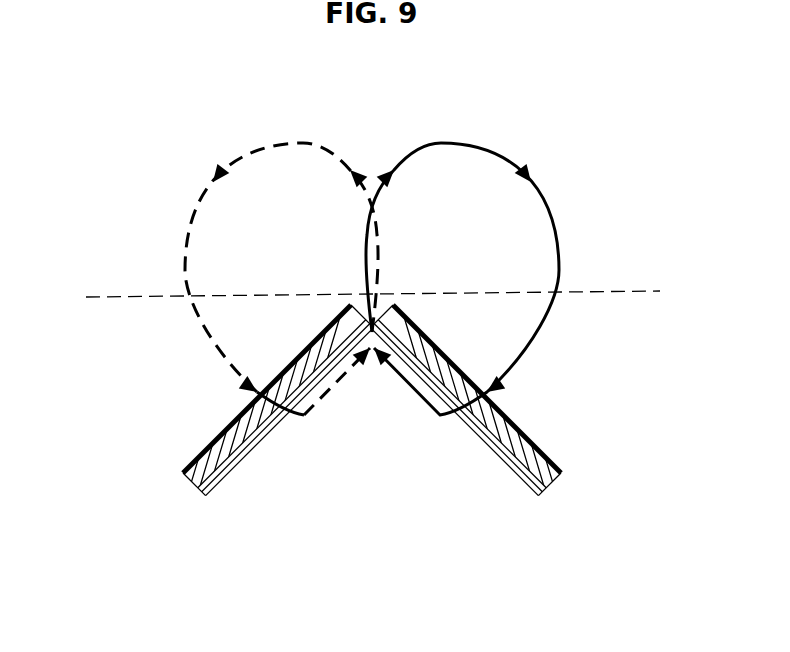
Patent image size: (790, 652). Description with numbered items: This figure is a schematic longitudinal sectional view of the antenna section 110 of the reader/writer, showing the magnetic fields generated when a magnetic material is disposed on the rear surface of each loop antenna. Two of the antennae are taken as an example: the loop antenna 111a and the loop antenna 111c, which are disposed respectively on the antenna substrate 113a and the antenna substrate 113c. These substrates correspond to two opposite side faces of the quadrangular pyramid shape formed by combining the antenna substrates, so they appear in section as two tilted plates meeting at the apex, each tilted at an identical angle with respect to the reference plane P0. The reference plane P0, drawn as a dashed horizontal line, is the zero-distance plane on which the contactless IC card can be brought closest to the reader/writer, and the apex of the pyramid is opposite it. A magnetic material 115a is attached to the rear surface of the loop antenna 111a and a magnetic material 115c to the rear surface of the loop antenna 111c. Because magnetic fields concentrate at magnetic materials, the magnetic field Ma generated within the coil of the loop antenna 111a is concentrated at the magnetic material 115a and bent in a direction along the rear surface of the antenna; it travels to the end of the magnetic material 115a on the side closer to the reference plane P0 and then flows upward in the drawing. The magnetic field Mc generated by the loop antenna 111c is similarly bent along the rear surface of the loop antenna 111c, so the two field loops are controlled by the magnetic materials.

The antenna section 110 is at (340, 436).
The loop antenna 111a is at (240, 428).
The loop antenna 111c is at (506, 428).
The antenna substrate 113a is at (203, 496).
The antenna substrate 113c is at (541, 496).
The magnetic material 115a is at (247, 457).
The magnetic material 115c is at (497, 457).
The magnetic field Ma is at (302, 142).
The magnetic field Mc is at (445, 142).
The reference plane P0 is at (389, 294).